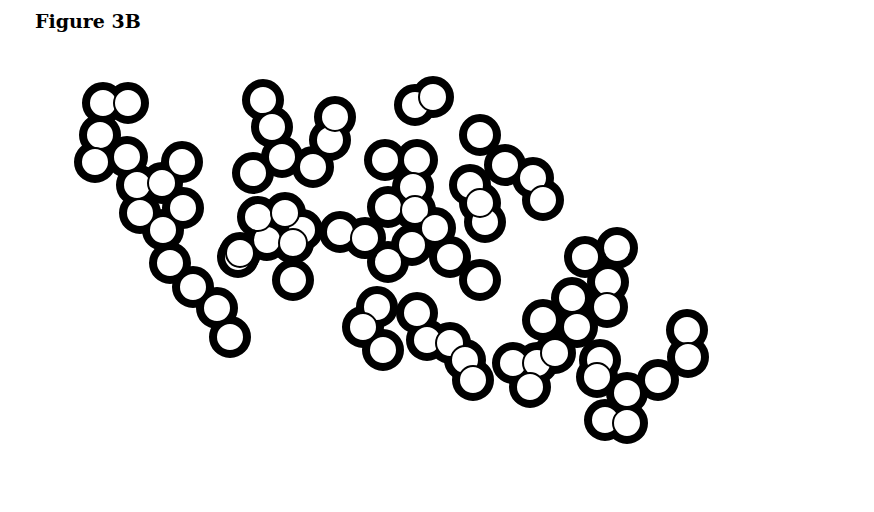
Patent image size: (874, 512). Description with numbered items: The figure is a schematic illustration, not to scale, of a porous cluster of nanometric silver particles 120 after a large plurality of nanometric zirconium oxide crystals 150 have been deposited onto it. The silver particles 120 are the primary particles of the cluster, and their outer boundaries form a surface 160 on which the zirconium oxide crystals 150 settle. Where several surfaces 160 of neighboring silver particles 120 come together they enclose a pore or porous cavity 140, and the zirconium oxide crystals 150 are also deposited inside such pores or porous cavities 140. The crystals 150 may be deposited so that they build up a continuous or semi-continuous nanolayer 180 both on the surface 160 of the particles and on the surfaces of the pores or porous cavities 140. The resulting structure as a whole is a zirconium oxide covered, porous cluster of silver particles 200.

The nanometric silver particles 120 is at (188, 285).
The pore or porous cavity 140 is at (352, 175).
The nanometric zirconium oxide crystals 150 is at (227, 357).
The surface of nanometric silver particles 160 is at (240, 353).
The continuous or semi-continuous nanolayer 180 is at (365, 173).
The zirconium oxide covered, porous cluster of silver particles 200 is at (630, 127).